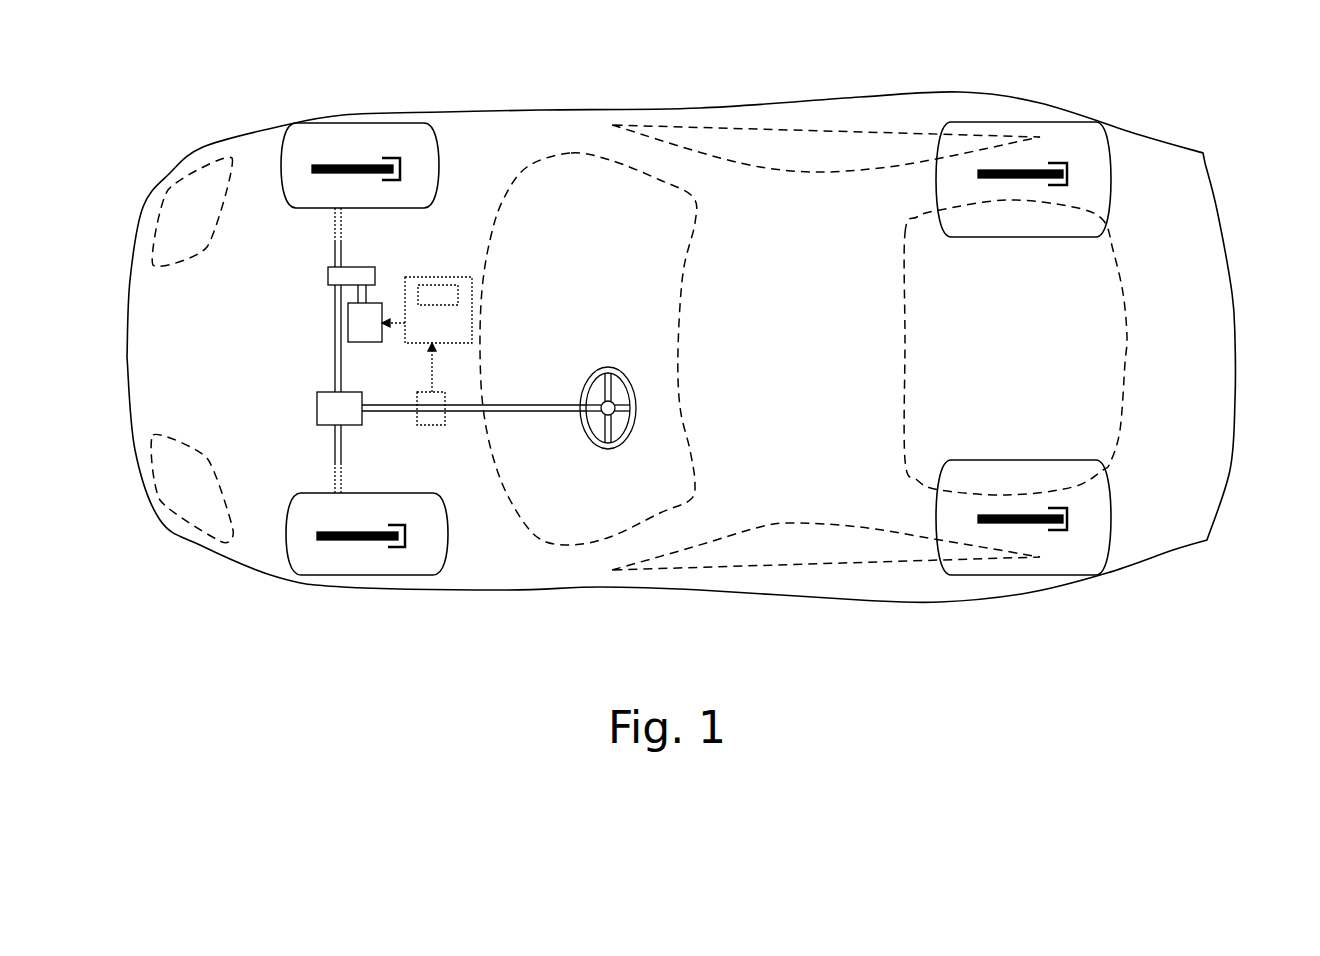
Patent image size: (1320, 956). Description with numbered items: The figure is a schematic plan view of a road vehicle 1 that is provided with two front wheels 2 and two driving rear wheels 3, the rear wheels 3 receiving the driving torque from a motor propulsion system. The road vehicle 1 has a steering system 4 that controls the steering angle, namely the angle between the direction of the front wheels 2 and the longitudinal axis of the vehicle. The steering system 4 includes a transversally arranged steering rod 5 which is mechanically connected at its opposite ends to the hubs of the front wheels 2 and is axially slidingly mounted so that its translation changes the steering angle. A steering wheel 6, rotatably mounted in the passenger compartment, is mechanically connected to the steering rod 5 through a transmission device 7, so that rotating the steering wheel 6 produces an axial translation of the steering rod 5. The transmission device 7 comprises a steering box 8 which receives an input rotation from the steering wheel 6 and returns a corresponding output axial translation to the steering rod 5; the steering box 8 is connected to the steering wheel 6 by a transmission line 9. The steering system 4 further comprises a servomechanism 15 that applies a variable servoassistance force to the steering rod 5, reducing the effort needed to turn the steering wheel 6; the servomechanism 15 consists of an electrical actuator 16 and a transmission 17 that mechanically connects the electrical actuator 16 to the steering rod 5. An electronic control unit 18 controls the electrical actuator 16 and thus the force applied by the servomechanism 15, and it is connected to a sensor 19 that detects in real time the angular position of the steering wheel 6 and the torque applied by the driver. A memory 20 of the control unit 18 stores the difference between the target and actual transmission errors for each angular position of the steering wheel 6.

The road vehicle 1 is at (706, 388).
The front wheels 2 is at (302, 143).
The driving rear wheels 3 is at (1095, 138).
The steering system 4 is at (459, 210).
The steering rod 5 is at (335, 250).
The steering wheel 6 is at (607, 367).
The transmission device 7 is at (220, 384).
The steering box 8 is at (317, 408).
The transmission line 9 is at (473, 447).
The servomechanism 15 is at (398, 266).
The electrical actuator 16 is at (367, 327).
The transmission 17 is at (328, 280).
The electronic control unit 18 is at (453, 323).
The sensor 19 is at (427, 418).
The memory 20 is at (443, 295).